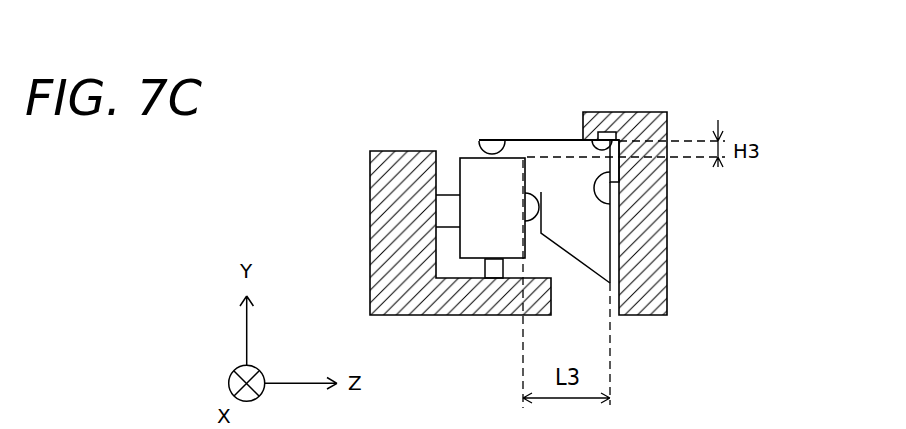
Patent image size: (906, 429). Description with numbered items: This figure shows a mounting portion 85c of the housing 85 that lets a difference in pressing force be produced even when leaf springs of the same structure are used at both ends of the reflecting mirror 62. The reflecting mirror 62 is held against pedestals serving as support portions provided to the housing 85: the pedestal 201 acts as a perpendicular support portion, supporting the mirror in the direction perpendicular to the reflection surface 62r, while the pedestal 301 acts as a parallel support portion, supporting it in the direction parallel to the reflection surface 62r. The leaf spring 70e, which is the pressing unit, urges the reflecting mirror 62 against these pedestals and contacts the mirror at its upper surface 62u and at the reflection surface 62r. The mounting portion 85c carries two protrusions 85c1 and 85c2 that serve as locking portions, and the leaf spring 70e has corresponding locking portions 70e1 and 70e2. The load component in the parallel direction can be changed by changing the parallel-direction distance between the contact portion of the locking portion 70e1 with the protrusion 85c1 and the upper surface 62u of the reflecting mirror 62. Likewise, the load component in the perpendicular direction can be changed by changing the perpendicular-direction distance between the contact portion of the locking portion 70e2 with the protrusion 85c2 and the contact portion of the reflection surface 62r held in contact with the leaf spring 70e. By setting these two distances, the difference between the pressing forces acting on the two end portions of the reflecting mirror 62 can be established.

The pedestal 201 is at (466, 188).
The reflecting mirror 62 is at (436, 159).
The upper surface 62u is at (468, 157).
The reflection surface 62r is at (527, 243).
The leaf spring 70e is at (558, 123).
The locking portion 70e1 is at (571, 138).
The locking portion 70e2 is at (611, 238).
The housing 85 is at (412, 312).
The mounting portion 85c is at (640, 304).
The protrusion 85c1 is at (606, 134).
The protrusion 85c2 is at (596, 207).
The pedestal 301 is at (493, 265).